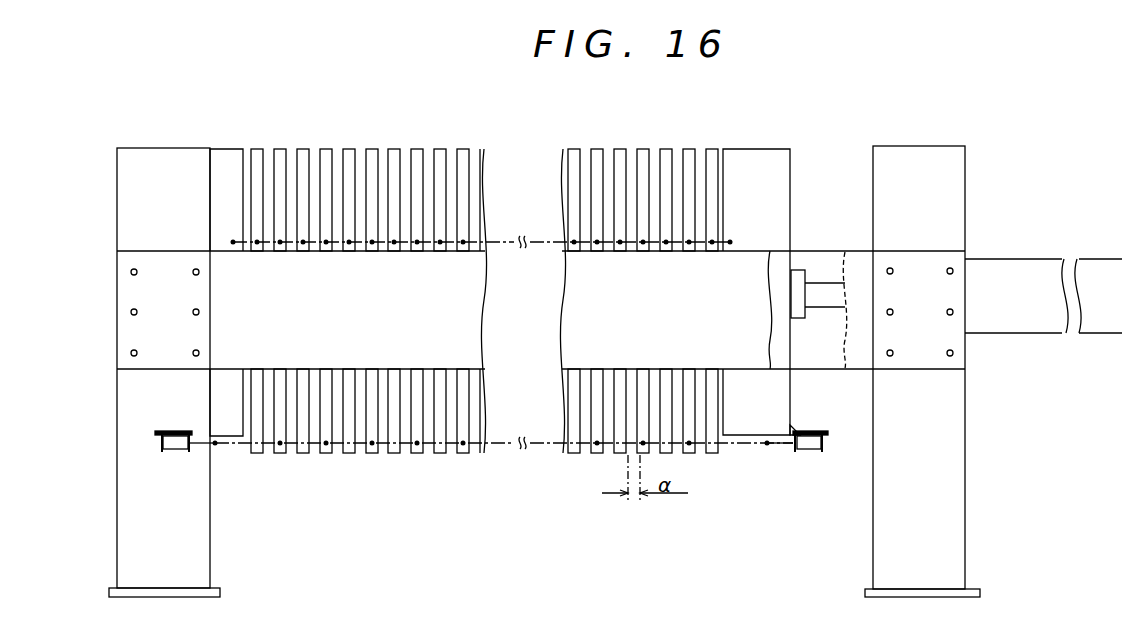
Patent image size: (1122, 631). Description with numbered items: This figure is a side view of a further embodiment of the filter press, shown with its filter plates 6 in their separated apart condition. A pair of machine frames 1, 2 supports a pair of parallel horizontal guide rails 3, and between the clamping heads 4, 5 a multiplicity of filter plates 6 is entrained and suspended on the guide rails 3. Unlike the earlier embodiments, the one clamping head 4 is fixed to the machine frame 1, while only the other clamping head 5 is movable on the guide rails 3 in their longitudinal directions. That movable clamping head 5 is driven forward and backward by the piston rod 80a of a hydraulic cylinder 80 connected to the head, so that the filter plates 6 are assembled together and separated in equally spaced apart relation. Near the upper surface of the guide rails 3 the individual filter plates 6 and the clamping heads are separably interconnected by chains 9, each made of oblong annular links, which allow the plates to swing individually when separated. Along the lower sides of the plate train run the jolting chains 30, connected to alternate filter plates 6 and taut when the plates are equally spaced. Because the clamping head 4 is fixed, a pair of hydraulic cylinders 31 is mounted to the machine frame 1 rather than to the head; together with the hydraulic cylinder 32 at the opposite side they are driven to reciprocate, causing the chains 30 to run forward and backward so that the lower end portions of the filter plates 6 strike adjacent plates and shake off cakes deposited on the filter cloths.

The machine frame 1 is at (192, 536).
The machine frame 2 is at (940, 486).
The guide rails 3 is at (580, 318).
The clamping head 4 is at (223, 170).
The clamping head 5 is at (760, 175).
The filter plates 6 is at (372, 152).
The chains 9 is at (585, 242).
The chains 30 is at (585, 450).
The hydraulic cylinders 31 is at (176, 452).
The hydraulic cylinder 32 is at (807, 452).
The hydraulic cylinder 80 is at (1031, 272).
The piston rod 80a is at (822, 296).